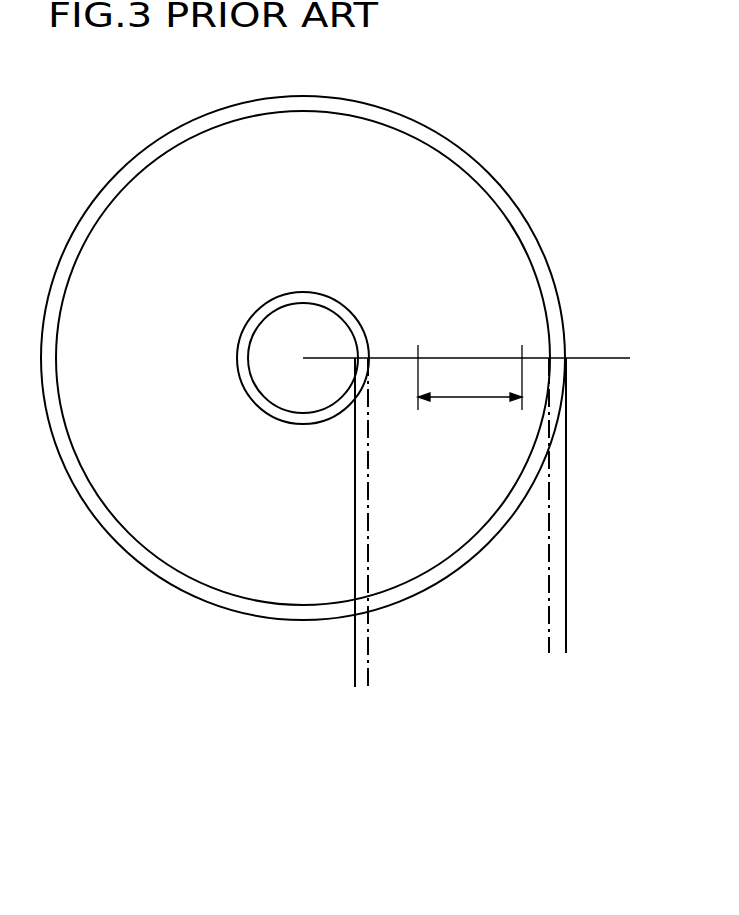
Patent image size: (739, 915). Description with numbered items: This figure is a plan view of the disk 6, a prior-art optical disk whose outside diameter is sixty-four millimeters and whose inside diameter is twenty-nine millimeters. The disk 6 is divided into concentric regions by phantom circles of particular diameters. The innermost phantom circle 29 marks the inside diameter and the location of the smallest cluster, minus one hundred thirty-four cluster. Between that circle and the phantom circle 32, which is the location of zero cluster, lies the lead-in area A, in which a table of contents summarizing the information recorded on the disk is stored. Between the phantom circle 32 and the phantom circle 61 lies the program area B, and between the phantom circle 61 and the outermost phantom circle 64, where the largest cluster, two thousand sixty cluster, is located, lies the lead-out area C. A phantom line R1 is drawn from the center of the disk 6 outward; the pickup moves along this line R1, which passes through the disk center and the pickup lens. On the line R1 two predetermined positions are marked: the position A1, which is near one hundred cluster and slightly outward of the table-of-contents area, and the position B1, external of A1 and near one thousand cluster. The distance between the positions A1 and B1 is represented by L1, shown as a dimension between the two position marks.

The disk 6 is at (379, 96).
The lead-in area A is at (352, 316).
The program area B is at (425, 178).
The lead-out area C is at (530, 237).
The phantom line R1 is at (466, 343).
The position A1 is at (419, 365).
The position B1 is at (522, 365).
The distance between A1 and B1 L1 is at (470, 387).
The phantom circle of twenty-nine millimeter diameter 29 is at (355, 630).
The phantom circle of thirty-two millimeter diameter 32 is at (368, 655).
The phantom circle of sixty-one millimeter diameter 61 is at (549, 572).
The phantom circle of sixty-four millimeter diameter 64 is at (566, 600).